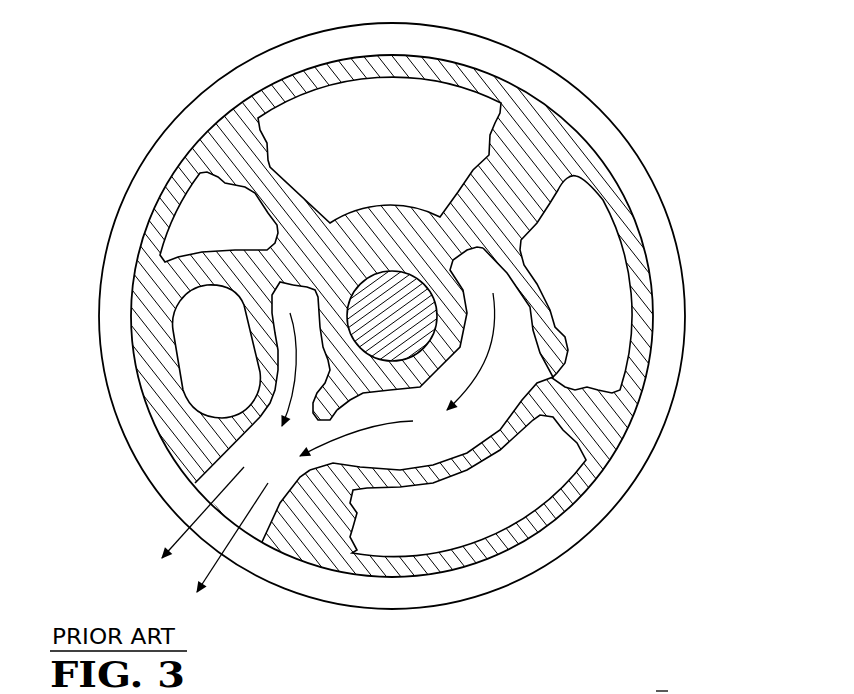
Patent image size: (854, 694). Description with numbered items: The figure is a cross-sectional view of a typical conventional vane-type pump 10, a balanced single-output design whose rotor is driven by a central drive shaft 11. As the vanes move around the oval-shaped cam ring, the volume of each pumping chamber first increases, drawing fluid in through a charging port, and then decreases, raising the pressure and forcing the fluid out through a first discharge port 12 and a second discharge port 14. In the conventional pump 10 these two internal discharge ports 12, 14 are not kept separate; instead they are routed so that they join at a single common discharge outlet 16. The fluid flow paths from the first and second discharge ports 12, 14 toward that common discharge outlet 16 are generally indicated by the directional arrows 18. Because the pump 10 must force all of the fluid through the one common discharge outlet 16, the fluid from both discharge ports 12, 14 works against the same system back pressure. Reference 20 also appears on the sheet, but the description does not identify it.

The conventional vane-type pump 10 is at (180, 47).
The drive shaft 11 is at (410, 308).
The first discharge port 12 is at (293, 297).
The second discharge port 14 is at (510, 340).
The common discharge outlet 16 is at (233, 498).
The directional arrows 18 is at (207, 507).
The element 20 is at (678, 688).